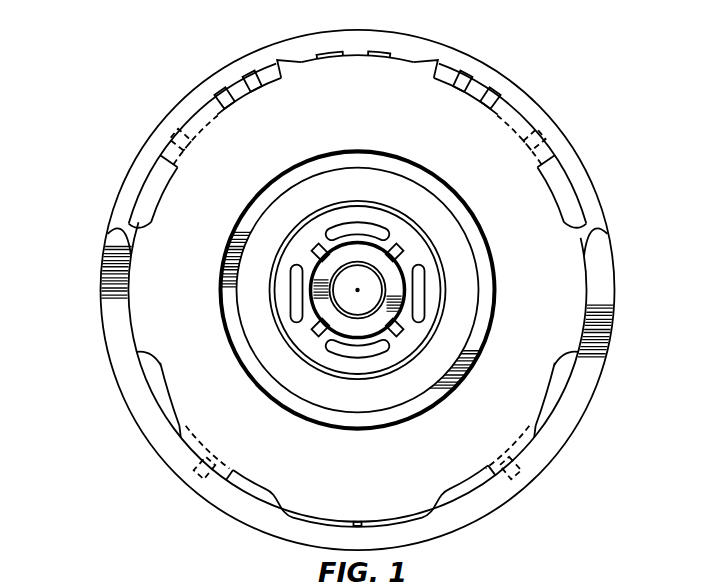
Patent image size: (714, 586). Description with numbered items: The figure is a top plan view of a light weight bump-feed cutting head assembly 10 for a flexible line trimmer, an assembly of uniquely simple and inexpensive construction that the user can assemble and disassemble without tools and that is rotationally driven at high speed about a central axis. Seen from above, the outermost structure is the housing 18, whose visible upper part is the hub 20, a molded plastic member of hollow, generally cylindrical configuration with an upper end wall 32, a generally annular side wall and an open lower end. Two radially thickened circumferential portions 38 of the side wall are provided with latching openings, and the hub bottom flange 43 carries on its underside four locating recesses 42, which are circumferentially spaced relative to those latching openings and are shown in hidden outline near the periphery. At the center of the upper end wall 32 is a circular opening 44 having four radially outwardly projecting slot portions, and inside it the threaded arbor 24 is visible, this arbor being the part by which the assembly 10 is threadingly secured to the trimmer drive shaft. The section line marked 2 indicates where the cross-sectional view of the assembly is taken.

The cutting head assembly 10 is at (363, 307).
The housing 18 is at (192, 184).
The hub 20 is at (374, 272).
The threaded arbor 24 is at (416, 280).
The upper end wall 32 is at (358, 242).
The radially thickened circumferential portions 38 is at (370, 293).
The locating recesses 42 is at (360, 307).
The hub bottom flange 43 is at (436, 289).
The circular opening 44 is at (333, 290).
The section line 2 is at (358, 279).